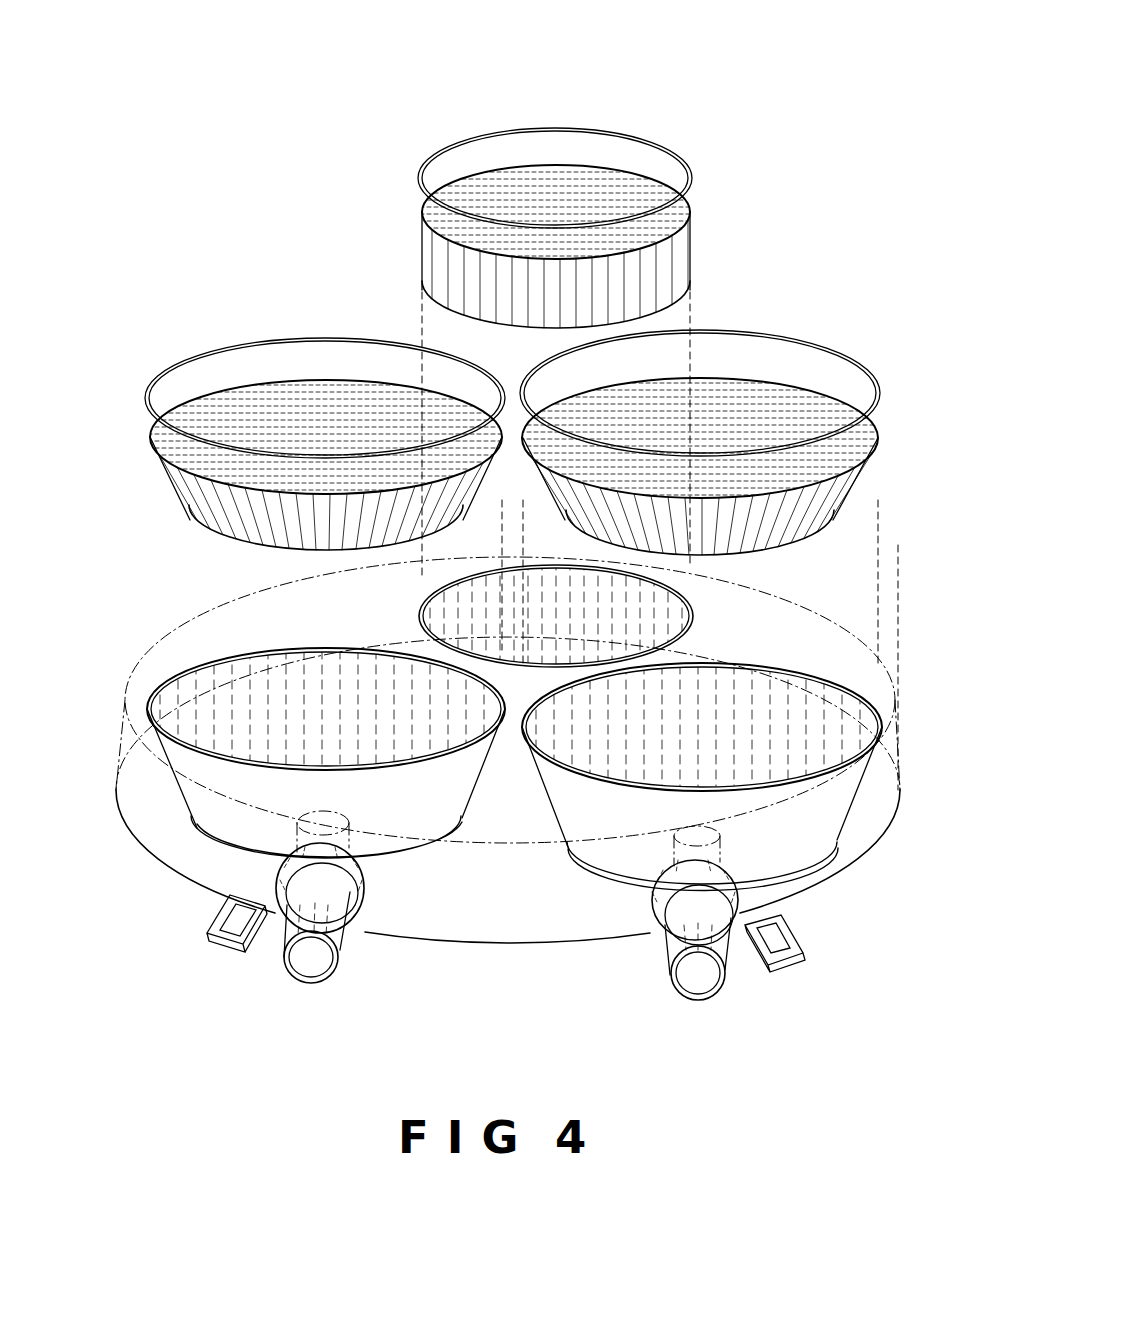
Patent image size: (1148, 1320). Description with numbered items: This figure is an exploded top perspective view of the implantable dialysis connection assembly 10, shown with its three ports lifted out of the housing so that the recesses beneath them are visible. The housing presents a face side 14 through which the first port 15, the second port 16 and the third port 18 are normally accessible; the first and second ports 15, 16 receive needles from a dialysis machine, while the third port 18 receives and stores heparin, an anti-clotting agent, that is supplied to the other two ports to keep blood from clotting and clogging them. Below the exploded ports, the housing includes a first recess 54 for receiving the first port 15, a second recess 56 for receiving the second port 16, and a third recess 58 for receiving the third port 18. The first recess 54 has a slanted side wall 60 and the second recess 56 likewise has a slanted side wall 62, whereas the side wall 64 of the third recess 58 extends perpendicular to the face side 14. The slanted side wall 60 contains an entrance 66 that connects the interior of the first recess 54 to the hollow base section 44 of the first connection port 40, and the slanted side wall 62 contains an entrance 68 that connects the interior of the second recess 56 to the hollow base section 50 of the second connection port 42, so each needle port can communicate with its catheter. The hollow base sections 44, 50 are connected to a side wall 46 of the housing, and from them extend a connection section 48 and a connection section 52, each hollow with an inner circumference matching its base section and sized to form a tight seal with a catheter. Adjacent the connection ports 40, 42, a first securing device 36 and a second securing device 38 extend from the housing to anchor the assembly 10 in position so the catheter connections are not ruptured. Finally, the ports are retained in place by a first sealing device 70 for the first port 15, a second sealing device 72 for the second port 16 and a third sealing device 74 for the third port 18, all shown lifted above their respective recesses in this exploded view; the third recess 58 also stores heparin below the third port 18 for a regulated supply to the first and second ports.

The implantable dialysis connection assembly 10 is at (232, 80).
The face side 14 is at (808, 648).
The first port 15 is at (875, 446).
The second port 16 is at (160, 440).
The third port 18 is at (428, 250).
The first securing device 36 is at (800, 940).
The second securing device 38 is at (212, 922).
The first connection port 40 is at (655, 965).
The second connection port 42 is at (355, 955).
The hollow base section 44 is at (730, 888).
The side wall 46 is at (520, 917).
The connection section 48 is at (722, 955).
The hollow base section 50 is at (360, 880).
The connection section 52 is at (285, 940).
The first recess 54 is at (822, 718).
The second recess 56 is at (403, 700).
The third recess 58 is at (672, 628).
The slanted side wall 60 is at (855, 730).
The slanted side wall 62 is at (320, 685).
The side wall 64 is at (490, 585).
The entrance 66 is at (722, 840).
The entrance 68 is at (297, 829).
The first sealing device 70 is at (772, 333).
The second sealing device 72 is at (290, 340).
The third sealing device 74 is at (440, 165).